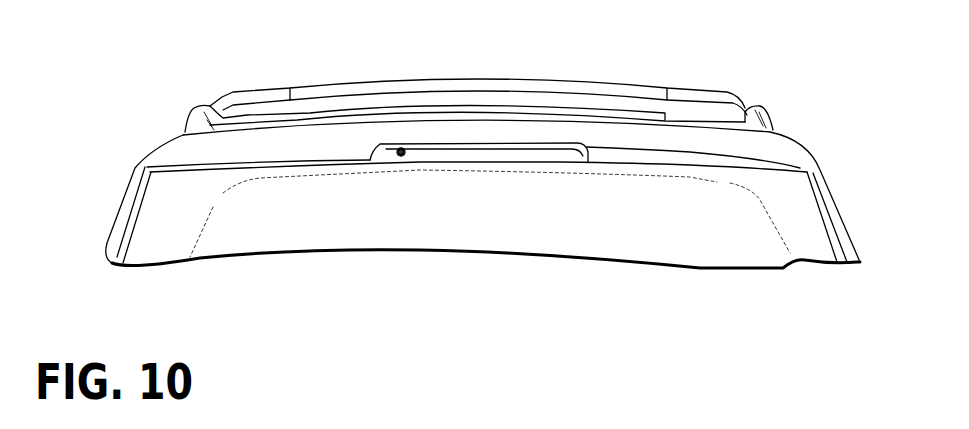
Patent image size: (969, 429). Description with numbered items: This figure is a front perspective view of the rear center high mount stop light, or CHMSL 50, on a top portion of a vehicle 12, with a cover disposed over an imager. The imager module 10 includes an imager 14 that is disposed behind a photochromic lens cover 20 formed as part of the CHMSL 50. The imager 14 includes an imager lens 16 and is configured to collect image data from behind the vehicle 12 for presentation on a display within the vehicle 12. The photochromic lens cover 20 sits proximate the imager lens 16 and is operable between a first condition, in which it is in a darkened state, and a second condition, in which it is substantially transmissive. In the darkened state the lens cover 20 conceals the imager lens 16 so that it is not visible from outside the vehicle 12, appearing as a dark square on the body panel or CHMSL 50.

The imager module 10 is at (384, 70).
The vehicle 12 is at (782, 150).
The imager 14 is at (400, 147).
The imager lens 16 is at (397, 153).
The photochromic lens cover 20 is at (403, 153).
The CHMSL 50 is at (518, 152).